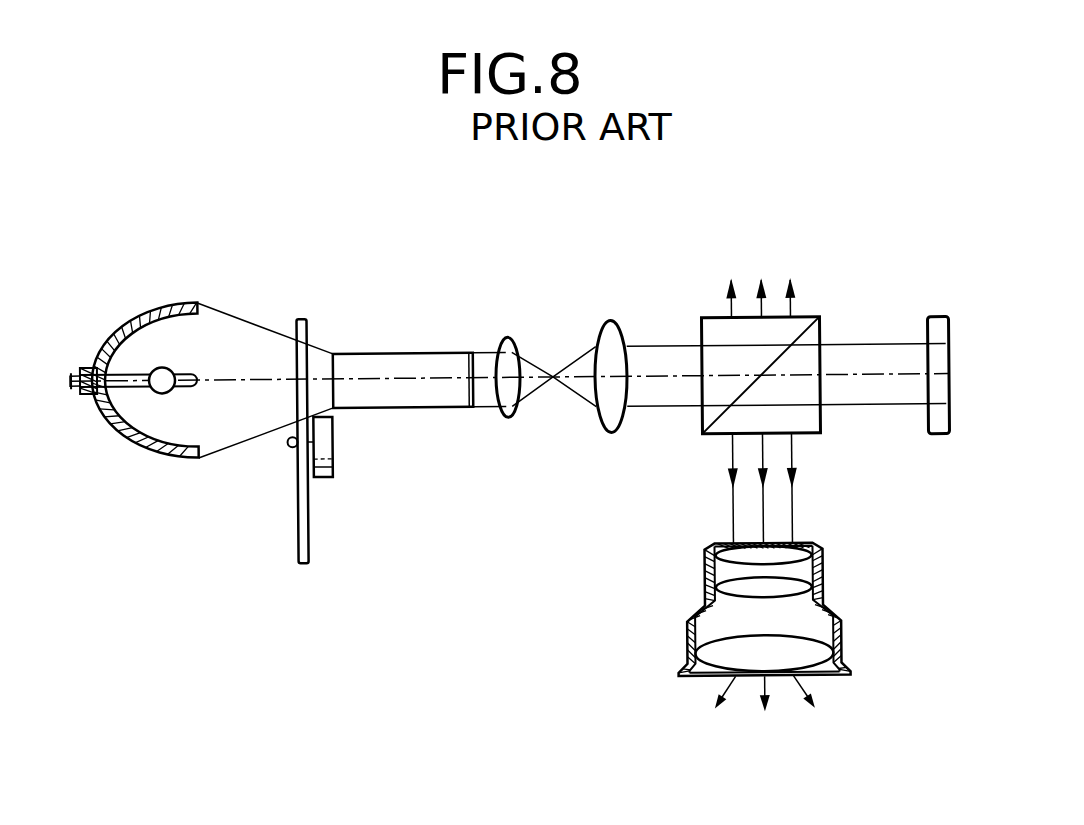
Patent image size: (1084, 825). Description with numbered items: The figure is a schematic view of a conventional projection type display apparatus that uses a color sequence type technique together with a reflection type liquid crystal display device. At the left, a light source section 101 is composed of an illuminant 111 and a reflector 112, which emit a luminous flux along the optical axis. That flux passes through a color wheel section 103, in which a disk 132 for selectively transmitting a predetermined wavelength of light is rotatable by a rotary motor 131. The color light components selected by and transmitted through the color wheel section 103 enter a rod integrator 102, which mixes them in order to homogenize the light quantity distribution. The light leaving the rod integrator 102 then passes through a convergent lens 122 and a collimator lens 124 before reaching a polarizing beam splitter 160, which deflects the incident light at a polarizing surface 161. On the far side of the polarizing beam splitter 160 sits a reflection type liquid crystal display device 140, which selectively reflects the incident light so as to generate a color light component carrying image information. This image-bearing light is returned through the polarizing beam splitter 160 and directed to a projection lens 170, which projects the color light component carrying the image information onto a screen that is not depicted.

The light source section 101 is at (148, 374).
The rod integrator 102 is at (413, 351).
The color wheel section 103 is at (318, 406).
The illuminant 111 is at (172, 365).
The reflector 112 is at (182, 457).
The convergent lens 122 is at (506, 339).
The collimator lens 124 is at (612, 320).
The rotary motor 131 is at (323, 476).
The disk 132 is at (297, 489).
The reflection type liquid crystal display device 140 is at (945, 318).
The polarizing beam splitter 160 is at (790, 328).
The polarizing surface 161 is at (810, 315).
The projection lens 170 is at (841, 557).